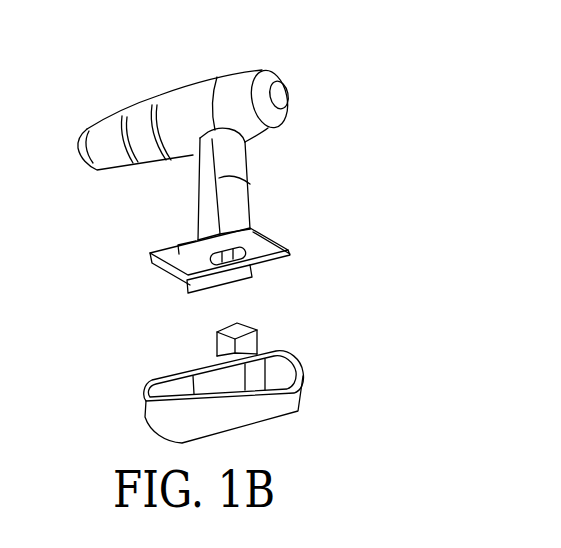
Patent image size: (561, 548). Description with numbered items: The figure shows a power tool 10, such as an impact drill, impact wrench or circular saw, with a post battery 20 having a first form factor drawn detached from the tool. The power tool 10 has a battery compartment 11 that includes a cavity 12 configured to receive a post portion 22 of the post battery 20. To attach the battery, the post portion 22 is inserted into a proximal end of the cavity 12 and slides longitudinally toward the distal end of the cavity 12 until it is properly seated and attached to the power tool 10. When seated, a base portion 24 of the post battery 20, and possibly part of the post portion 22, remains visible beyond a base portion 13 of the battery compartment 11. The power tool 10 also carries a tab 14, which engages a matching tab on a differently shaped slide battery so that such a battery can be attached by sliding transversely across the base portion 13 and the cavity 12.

The power tool 10 is at (302, 77).
The battery compartment 11 is at (219, 259).
The cavity 12 is at (230, 264).
The base portion 13 is at (262, 232).
The tab 14 is at (262, 265).
The post battery 20 is at (209, 377).
The post portion 22 is at (256, 334).
The base portion 24 is at (283, 378).